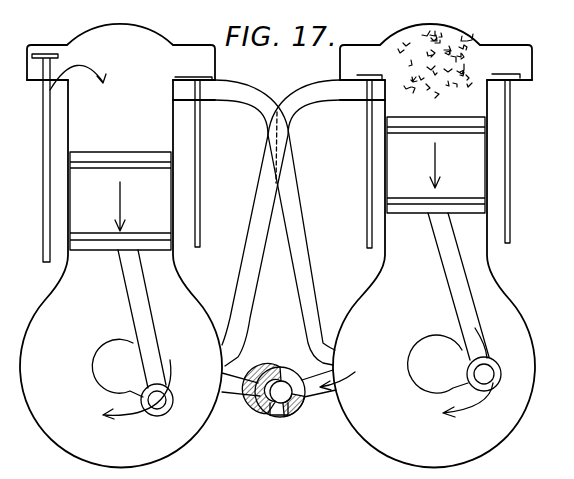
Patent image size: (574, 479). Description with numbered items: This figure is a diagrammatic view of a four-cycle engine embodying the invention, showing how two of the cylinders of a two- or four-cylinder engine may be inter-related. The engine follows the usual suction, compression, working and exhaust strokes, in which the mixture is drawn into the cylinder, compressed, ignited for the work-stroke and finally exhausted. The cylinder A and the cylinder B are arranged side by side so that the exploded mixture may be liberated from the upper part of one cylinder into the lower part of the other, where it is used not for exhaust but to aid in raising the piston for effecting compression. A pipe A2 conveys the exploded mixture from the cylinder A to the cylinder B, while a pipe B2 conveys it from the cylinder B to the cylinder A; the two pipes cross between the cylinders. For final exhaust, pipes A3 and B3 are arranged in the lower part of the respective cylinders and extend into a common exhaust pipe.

The cylinder A is at (121, 246).
The cylinder B is at (434, 246).
The pipe A2 is at (311, 213).
The pipe B2 is at (248, 233).
The exhaust pipe A3 is at (235, 399).
The exhaust pipe B3 is at (318, 400).